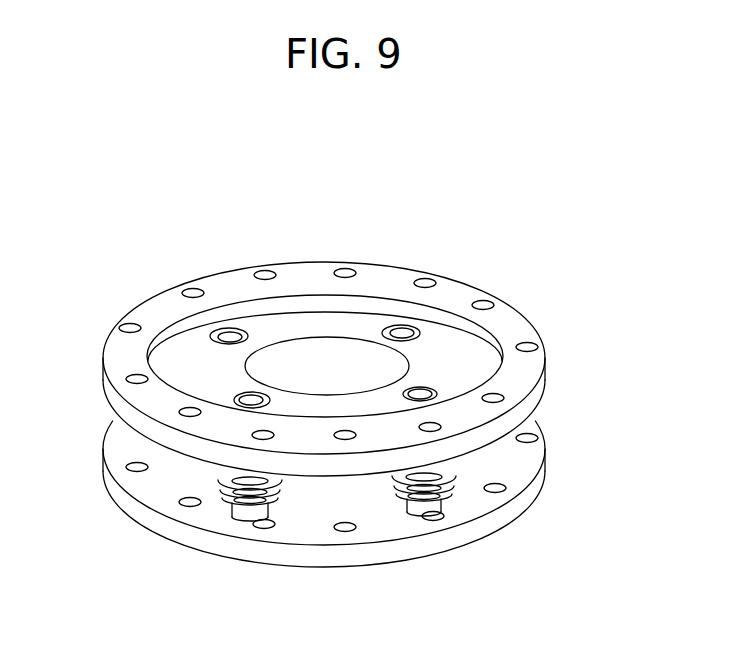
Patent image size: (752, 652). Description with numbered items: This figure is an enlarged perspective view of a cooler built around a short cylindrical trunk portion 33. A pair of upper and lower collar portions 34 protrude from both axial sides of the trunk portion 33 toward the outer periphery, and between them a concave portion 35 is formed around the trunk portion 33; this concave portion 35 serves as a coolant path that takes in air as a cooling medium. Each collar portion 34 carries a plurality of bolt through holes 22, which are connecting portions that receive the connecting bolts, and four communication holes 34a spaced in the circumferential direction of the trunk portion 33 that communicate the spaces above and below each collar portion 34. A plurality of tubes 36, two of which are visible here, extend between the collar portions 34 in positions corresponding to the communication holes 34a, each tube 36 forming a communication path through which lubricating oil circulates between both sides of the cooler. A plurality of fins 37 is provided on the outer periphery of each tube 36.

The bolt through holes 22 is at (263, 277).
The trunk portion 33 is at (296, 360).
The collar portions 34 is at (452, 288).
The communication holes 34a is at (226, 334).
The concave portion 35 is at (183, 475).
The tubes 36 is at (244, 510).
The fins 37 is at (393, 503).